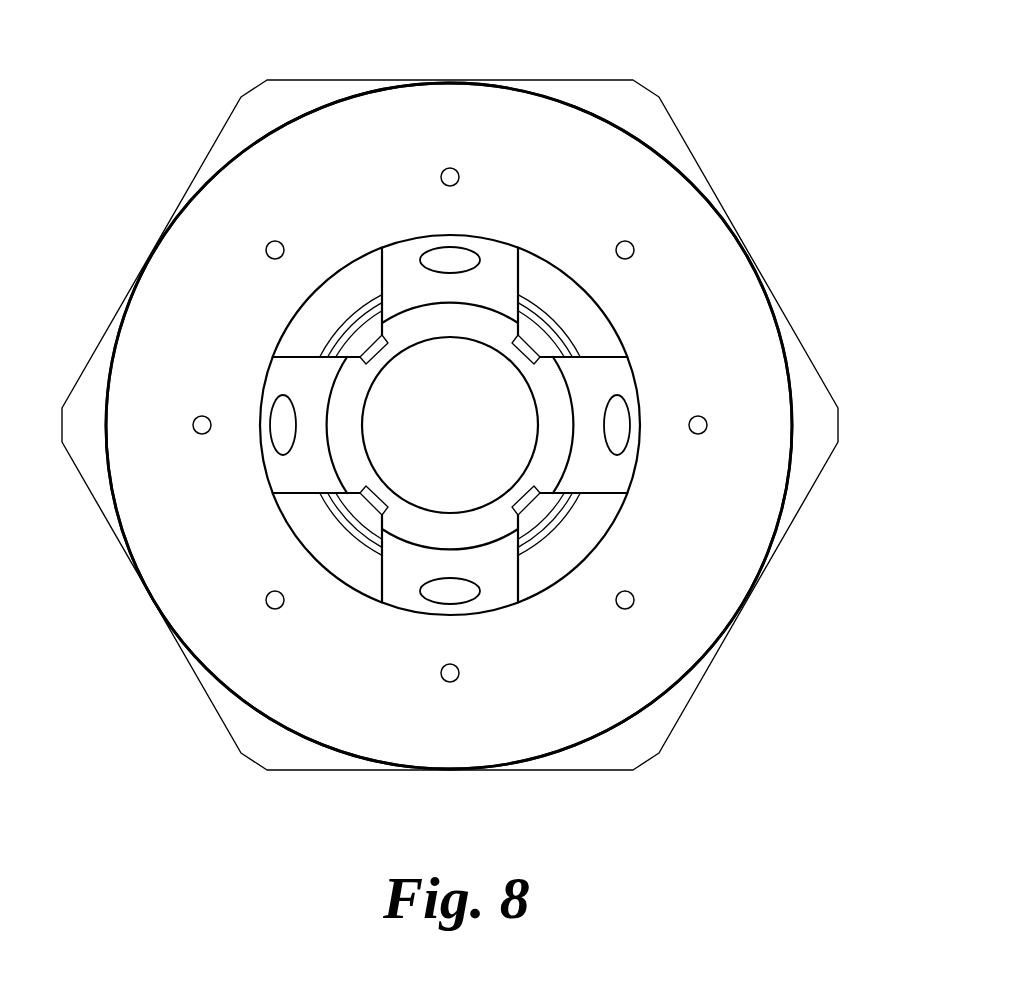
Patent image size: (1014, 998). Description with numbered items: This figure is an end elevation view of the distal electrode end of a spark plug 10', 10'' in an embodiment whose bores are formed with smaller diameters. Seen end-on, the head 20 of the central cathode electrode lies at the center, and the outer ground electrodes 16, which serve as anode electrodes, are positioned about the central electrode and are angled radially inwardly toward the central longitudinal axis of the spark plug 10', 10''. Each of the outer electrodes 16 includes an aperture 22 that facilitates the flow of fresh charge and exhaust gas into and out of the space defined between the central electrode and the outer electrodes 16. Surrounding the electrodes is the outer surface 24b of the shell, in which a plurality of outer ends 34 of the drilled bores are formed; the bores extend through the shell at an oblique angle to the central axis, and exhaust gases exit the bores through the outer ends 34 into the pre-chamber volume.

The spark plug 10' is at (482, 390).
The spark plug 10'' is at (449, 426).
The outer ground electrodes 16 is at (307, 388).
The head 20 is at (462, 380).
The aperture 22 is at (283, 446).
The outer surface 24b is at (323, 627).
The outer end 34 is at (452, 168).